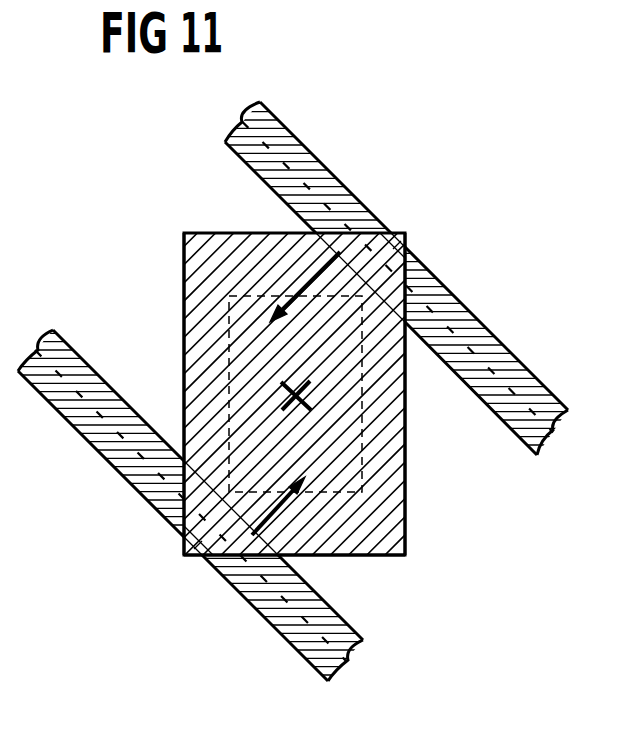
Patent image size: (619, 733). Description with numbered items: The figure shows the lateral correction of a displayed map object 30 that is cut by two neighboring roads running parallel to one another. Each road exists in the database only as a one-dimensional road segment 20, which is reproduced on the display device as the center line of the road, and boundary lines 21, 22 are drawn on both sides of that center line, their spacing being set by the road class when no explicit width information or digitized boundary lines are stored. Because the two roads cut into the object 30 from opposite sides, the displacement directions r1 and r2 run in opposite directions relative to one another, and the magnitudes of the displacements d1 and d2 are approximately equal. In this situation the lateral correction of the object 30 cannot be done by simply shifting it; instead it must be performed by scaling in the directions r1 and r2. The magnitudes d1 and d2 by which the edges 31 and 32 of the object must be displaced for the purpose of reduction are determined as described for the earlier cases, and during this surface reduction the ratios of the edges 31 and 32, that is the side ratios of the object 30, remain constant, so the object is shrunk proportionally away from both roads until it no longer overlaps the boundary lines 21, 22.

The road segment 20 is at (266, 126).
The boundary line 21 is at (528, 448).
The boundary line 22 is at (465, 303).
The object 30 is at (175, 197).
The edge of the object 31 is at (370, 558).
The edge of the object 32 is at (180, 312).
The displacement magnitude d1 is at (383, 230).
The displacement magnitude d2 is at (207, 558).
The displacement direction r1 is at (318, 267).
The displacement direction r2 is at (273, 515).